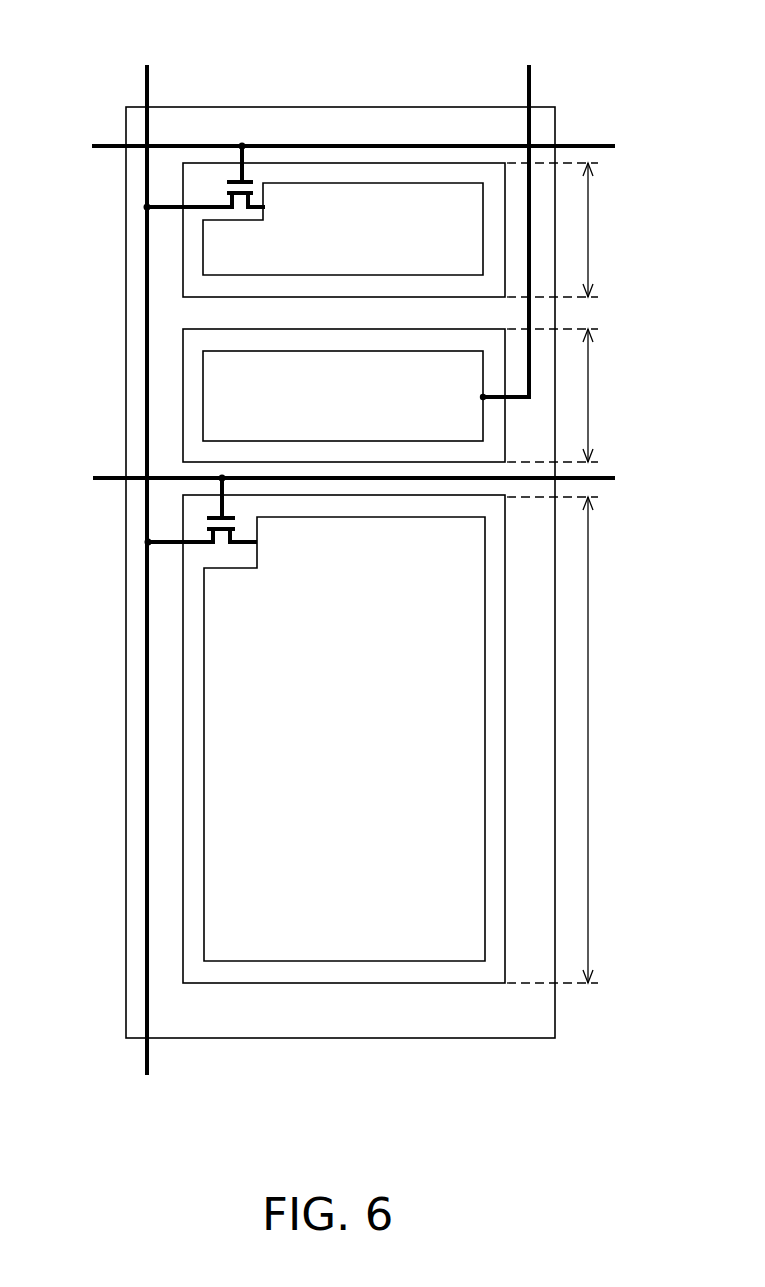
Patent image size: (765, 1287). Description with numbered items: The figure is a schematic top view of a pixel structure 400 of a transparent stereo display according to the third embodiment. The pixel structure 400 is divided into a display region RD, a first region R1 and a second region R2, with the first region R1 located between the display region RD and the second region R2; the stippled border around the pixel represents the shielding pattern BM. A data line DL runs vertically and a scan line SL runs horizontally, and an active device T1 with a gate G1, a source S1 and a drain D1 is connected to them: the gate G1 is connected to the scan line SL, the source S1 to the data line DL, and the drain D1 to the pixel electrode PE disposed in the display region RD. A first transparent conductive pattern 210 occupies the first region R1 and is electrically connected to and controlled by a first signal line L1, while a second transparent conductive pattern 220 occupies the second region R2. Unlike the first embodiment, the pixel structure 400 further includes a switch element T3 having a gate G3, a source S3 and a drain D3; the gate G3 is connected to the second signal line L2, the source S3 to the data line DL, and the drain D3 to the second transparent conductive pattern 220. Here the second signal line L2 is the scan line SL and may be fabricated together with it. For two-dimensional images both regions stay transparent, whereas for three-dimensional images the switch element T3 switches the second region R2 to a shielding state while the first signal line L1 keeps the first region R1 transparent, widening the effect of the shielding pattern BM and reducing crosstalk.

The pixel structure 400 is at (672, 1117).
The shielding pattern BM is at (138, 670).
The second transparent conductive pattern 220 is at (203, 260).
The first transparent conductive pattern 210 is at (203, 412).
The pixel electrode PE is at (204, 813).
The data line DL is at (140, 553).
The first signal line L1 is at (509, 215).
The second signal line L2 is at (340, 144).
The scan line SL is at (339, 477).
The switch element T3 is at (232, 107).
The gate G3 is at (244, 178).
The source S3 is at (200, 206).
The drain D3 is at (258, 205).
The active device T1 is at (139, 553).
The gate G1 is at (218, 515).
The source S1 is at (166, 546).
The drain D1 is at (242, 547).
The second region R2 is at (568, 230).
The first region R1 is at (568, 395).
The display region RD is at (569, 740).